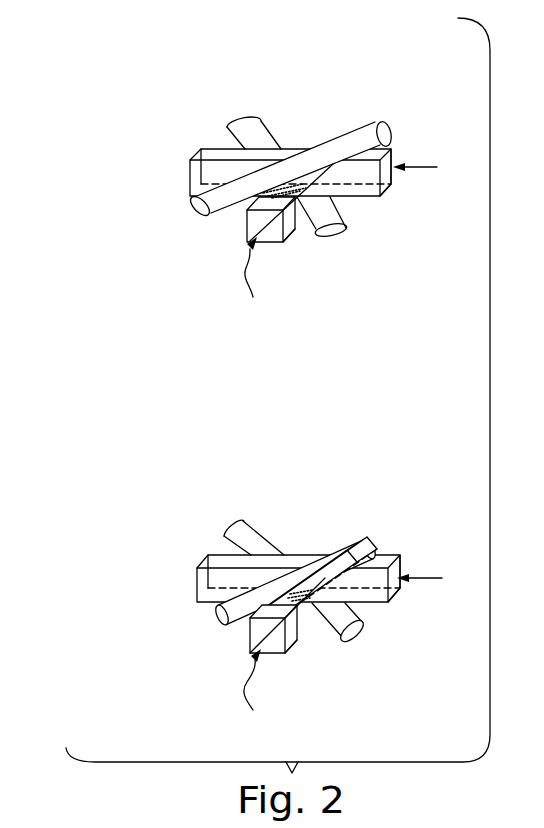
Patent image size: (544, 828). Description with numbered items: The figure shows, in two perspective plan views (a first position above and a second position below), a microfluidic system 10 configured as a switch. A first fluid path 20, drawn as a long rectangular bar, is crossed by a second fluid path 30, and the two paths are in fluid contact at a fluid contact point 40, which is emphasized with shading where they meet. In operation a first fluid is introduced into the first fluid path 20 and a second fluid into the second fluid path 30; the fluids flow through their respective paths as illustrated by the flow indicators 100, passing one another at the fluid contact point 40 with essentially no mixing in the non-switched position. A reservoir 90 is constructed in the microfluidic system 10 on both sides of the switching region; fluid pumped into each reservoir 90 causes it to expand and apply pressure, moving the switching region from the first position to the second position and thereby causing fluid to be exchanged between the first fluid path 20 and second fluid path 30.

The microfluidic system 10 is at (190, 120).
The first fluid path 20 is at (193, 184).
The second fluid path 30 is at (286, 242).
The fluid contact point 40 is at (266, 192).
The reservoir 90 is at (260, 119).
The flow indicators 100 is at (418, 166).